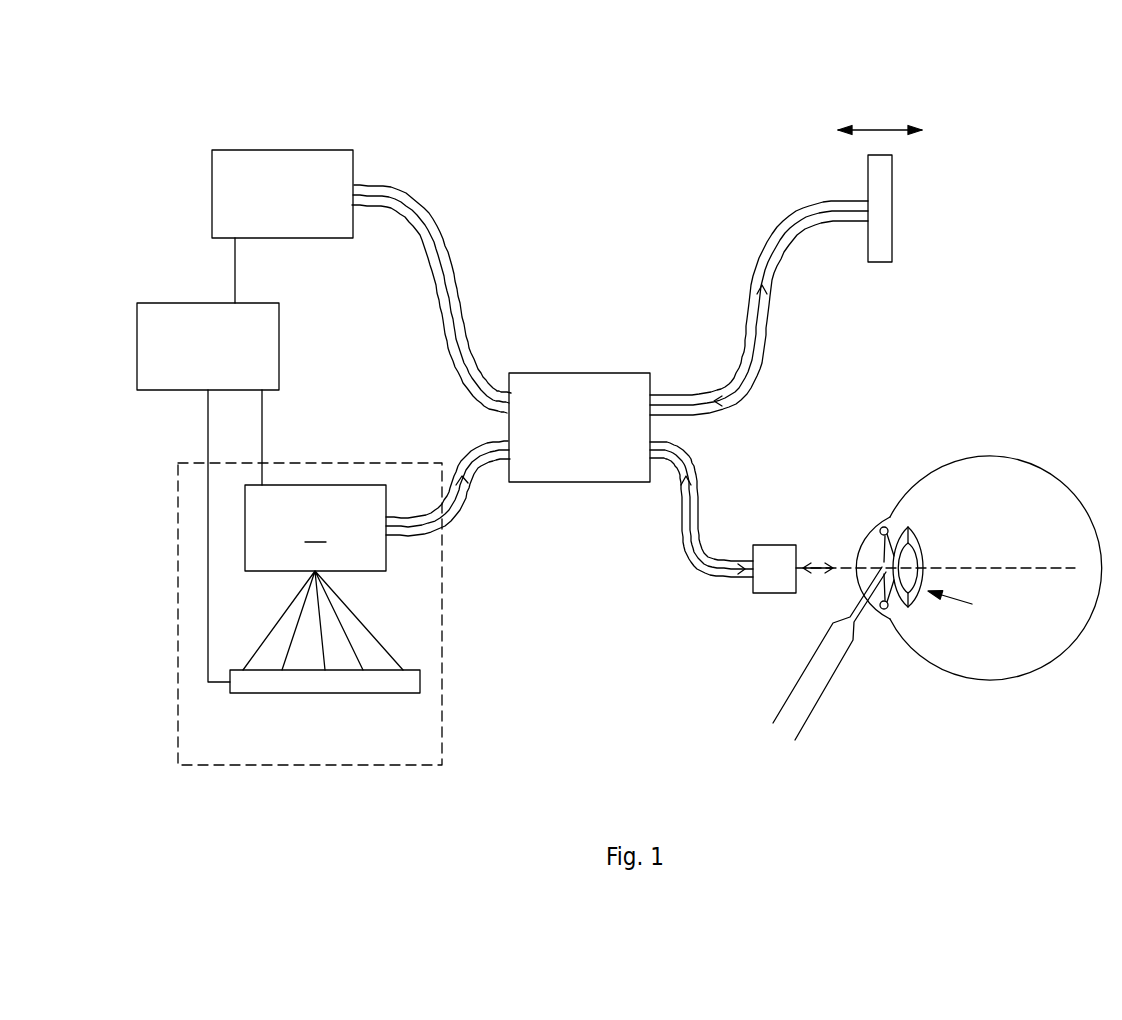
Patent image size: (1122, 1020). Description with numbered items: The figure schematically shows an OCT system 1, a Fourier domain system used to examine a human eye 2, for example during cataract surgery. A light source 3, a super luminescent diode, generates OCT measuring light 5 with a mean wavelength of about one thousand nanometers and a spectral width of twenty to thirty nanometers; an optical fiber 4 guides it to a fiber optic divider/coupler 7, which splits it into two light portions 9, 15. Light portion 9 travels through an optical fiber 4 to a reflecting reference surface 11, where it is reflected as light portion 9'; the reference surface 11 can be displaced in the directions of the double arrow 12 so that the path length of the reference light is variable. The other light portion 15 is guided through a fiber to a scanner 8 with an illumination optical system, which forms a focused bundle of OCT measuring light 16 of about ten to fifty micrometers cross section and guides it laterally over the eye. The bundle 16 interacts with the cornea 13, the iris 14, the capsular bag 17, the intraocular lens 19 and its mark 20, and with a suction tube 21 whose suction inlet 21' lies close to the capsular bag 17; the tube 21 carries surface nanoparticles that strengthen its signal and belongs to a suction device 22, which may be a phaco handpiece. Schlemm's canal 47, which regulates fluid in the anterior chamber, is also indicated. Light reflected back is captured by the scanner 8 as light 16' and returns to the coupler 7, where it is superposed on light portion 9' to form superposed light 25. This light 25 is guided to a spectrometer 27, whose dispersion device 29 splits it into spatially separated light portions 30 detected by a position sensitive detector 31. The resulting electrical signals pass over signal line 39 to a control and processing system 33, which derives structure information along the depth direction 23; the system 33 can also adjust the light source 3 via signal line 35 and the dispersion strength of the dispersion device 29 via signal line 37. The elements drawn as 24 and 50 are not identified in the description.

The OCT system 1 is at (136, 162).
The human eye 2 is at (996, 426).
The light source 3 is at (282, 150).
The optical fiber 4 is at (386, 186).
The OCT measuring light 5 is at (441, 267).
The fiber optic divider/coupler 7 is at (580, 373).
The scanner 8 is at (771, 545).
The light portion 9 is at (759, 308).
The reflected light portion 9' is at (706, 371).
The reflecting reference surface 11 is at (893, 232).
The double arrow 12 is at (880, 127).
The cornea 13 is at (878, 527).
The iris 14 is at (909, 527).
The light portion 15 is at (735, 560).
The bundle of OCT measuring light 16 is at (823, 540).
The reflected light 16' is at (732, 508).
The capsular bag 17 is at (921, 545).
The intraocular lens 19 is at (962, 606).
The mark 20 is at (918, 598).
The suction tube 21 is at (848, 572).
The suction inlet 21' is at (858, 537).
The suction device 22 is at (886, 706).
The depth direction 23 is at (1028, 566).
The surgical instrument 24 is at (810, 715).
The superposed light 25 is at (465, 481).
The spectrometer 27 is at (442, 715).
The dispersion device 29 is at (315, 528).
The spatially separated light portions 30 is at (353, 643).
The position sensitive detector 31 is at (300, 693).
The control and processing system 33 is at (137, 345).
The signal line 35 is at (235, 270).
The signal line 37 is at (262, 437).
The signal line 39 is at (208, 427).
The Schlemm's canal 47 is at (884, 526).
The lens nucleus 50 is at (919, 557).